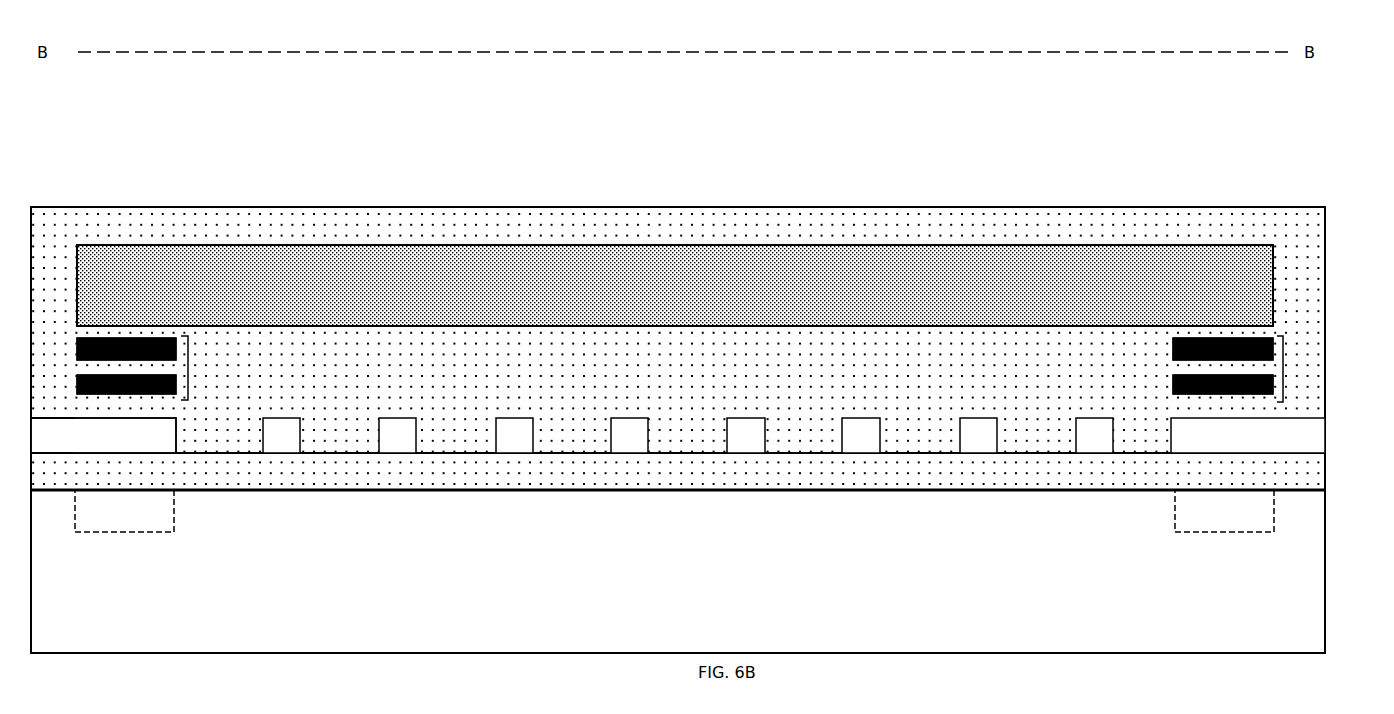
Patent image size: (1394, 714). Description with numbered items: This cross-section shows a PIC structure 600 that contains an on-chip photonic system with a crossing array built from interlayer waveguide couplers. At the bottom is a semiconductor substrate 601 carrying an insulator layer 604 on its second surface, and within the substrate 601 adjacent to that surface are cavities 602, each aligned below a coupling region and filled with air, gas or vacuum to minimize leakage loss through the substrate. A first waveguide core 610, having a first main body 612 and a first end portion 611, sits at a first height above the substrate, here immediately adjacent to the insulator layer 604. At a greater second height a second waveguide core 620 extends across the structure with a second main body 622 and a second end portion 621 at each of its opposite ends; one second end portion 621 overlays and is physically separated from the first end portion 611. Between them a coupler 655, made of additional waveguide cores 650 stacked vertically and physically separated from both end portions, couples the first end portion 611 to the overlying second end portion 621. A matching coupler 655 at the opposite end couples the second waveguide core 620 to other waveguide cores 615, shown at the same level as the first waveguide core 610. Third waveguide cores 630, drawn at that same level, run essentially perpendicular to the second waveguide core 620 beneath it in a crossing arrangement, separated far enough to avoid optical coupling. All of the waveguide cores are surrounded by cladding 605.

The PIC structure 600 is at (731, 200).
The semiconductor substrate 601 is at (678, 571).
The cavity 602 is at (674, 511).
The insulator layer 604 is at (1325, 473).
The cladding 605 is at (1325, 272).
The first waveguide core 610 is at (176, 436).
The first end portion 611 is at (103, 435).
The first main body 612 is at (53, 435).
The other waveguide cores 615 is at (1325, 436).
The second waveguide core 620 is at (1273, 287).
The second end portion 621 is at (675, 285).
The second main body 622 is at (675, 285).
The third waveguide core 630 is at (281, 455).
The additional waveguide core 650 is at (1173, 383).
The coupler 655 is at (188, 368).